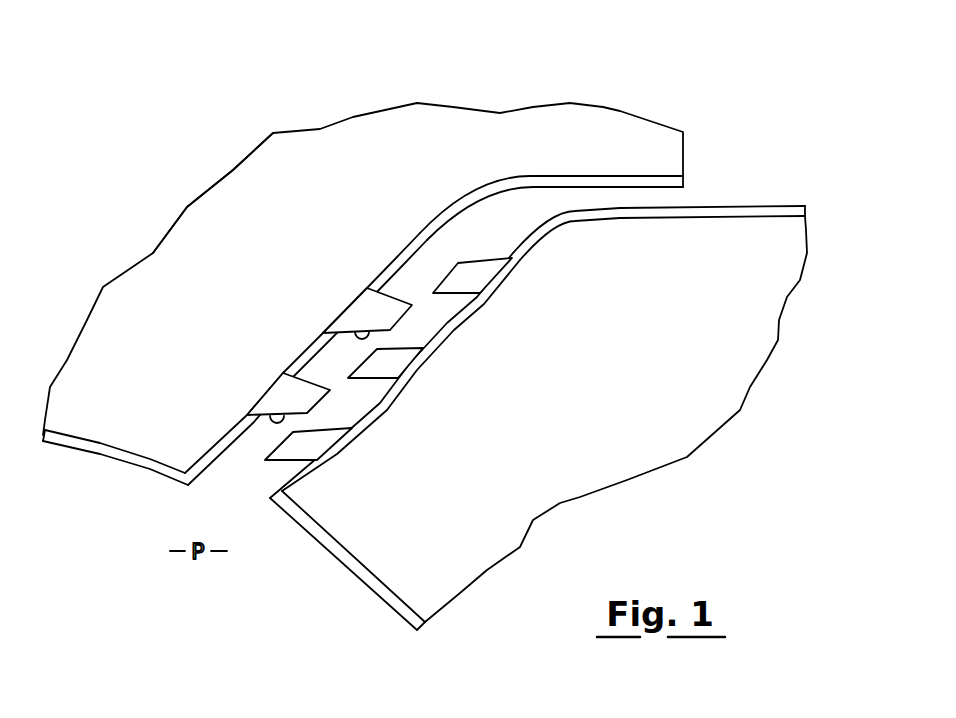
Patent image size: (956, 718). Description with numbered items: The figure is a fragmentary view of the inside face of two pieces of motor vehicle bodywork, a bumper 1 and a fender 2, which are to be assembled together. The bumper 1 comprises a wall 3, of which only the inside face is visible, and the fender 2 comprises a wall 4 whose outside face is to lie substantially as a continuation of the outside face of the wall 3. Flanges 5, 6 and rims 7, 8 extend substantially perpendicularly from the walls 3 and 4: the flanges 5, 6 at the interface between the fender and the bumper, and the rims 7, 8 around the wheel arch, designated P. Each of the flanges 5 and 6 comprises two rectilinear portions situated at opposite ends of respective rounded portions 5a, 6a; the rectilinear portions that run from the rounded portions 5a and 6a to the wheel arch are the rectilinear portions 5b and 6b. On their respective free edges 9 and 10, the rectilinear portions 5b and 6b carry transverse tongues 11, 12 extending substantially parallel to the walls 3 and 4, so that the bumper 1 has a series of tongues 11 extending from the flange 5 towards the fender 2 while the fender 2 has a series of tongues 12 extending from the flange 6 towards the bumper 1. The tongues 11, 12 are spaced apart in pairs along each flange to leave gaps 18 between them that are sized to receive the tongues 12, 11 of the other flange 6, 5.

The bumper 1 is at (772, 182).
The fender 2 is at (457, 85).
The wall 3 is at (693, 387).
The wall 4 is at (252, 192).
The flange 5 is at (569, 320).
The rounded portion 5a is at (527, 265).
The rectilinear portion 5b is at (440, 318).
The flange 6 is at (461, 294).
The rounded portion 6a is at (520, 172).
The rectilinear portion 6b is at (398, 259).
The rim 7 is at (355, 545).
The rim 8 is at (90, 443).
The free edge 9 is at (398, 378).
The free edge 10 is at (293, 358).
The tongues 11 is at (477, 280).
The tongues 12 is at (368, 312).
The gaps 18 is at (330, 358).